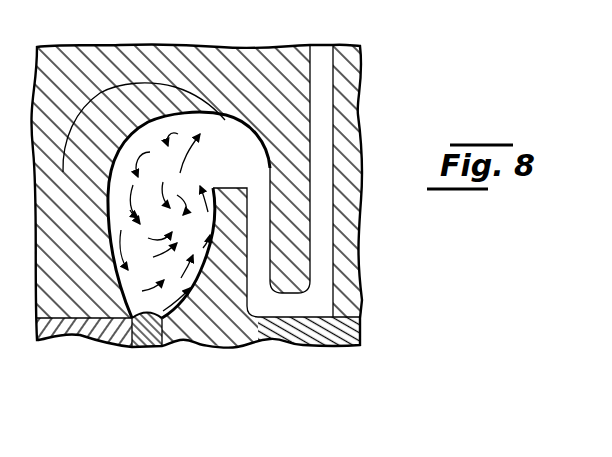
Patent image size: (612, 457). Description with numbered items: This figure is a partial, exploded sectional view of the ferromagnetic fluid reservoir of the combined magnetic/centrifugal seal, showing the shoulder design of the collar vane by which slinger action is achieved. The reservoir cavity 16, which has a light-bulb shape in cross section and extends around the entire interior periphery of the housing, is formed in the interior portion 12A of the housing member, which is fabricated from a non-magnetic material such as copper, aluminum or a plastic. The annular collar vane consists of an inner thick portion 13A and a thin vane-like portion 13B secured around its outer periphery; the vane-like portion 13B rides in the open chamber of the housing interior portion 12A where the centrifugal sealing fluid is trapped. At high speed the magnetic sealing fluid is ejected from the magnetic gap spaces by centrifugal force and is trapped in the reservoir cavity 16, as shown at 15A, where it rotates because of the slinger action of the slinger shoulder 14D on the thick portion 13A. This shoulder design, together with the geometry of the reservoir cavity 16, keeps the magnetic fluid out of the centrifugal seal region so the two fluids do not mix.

The reservoir cavity 16 is at (132, 94).
The trapped magnetic sealing fluid 15A is at (203, 137).
The interior portion of housing member 12A is at (305, 218).
The vane-like portion 13B is at (346, 101).
The slinger shoulder 14D is at (233, 268).
The inner thick portion of collar vane 13A is at (184, 341).